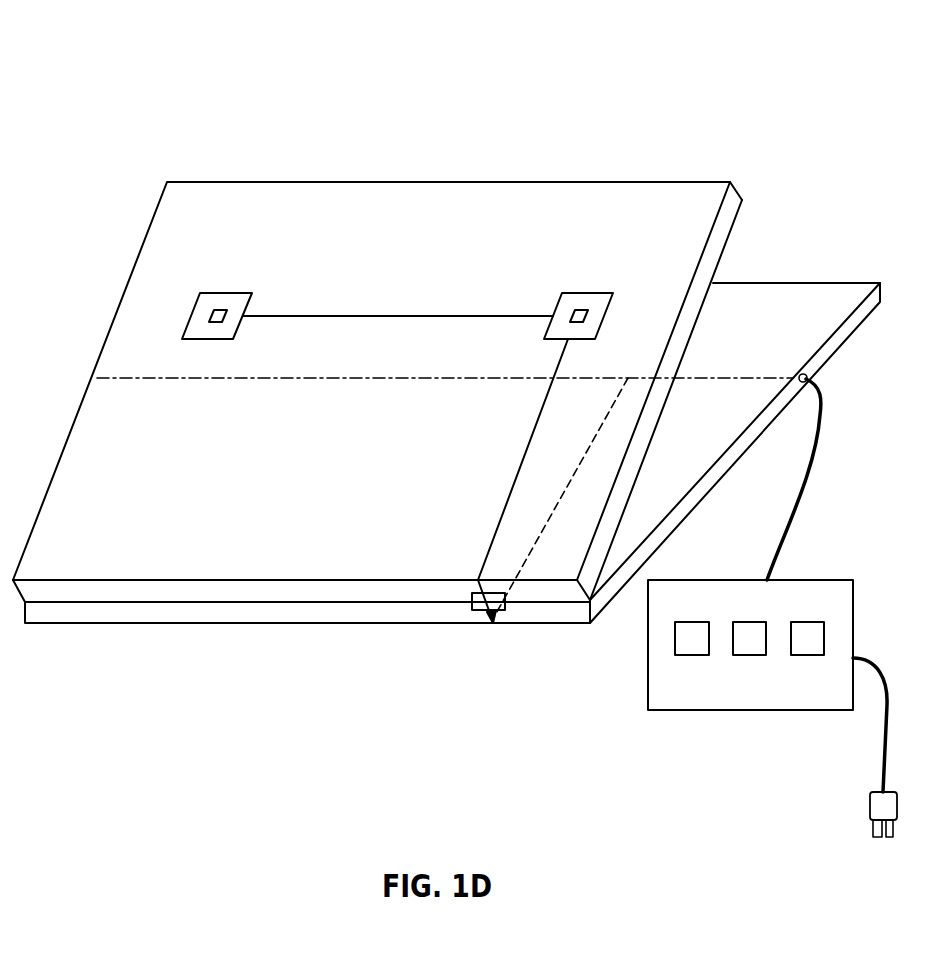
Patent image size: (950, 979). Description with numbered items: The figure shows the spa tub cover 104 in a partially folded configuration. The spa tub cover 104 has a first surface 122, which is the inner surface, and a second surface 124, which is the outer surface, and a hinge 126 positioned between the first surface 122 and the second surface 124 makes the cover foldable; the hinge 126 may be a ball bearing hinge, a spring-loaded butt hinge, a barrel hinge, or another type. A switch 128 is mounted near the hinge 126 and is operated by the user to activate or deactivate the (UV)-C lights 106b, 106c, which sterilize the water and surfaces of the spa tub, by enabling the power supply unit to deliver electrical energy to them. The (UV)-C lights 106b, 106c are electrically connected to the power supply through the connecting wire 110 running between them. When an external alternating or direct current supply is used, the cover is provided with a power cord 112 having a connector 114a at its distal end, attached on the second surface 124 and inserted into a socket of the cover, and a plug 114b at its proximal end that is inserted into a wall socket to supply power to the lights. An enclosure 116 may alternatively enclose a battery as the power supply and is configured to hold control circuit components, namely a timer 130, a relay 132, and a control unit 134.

The spa tub cover 104 is at (138, 40).
The (UV)-C light 106b is at (580, 308).
The (UV)-C light 106c is at (218, 310).
The connecting wire 110 is at (328, 316).
The power cord 112 is at (788, 527).
The connector 114a is at (810, 375).
The plug 114b is at (880, 838).
The enclosure 116 is at (703, 614).
The first surface 122 is at (125, 545).
The second surface 124 is at (818, 297).
The hinge 126 is at (333, 598).
The switch 128 is at (476, 612).
The timer 130 is at (690, 655).
The relay 132 is at (749, 655).
The control unit 134 is at (807, 655).